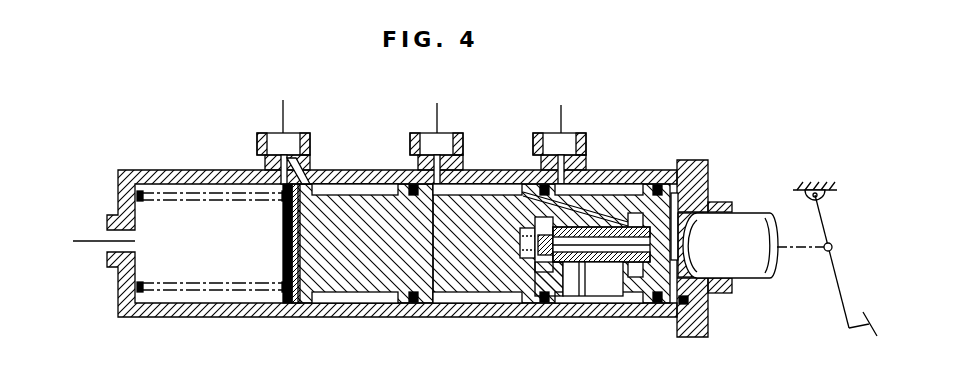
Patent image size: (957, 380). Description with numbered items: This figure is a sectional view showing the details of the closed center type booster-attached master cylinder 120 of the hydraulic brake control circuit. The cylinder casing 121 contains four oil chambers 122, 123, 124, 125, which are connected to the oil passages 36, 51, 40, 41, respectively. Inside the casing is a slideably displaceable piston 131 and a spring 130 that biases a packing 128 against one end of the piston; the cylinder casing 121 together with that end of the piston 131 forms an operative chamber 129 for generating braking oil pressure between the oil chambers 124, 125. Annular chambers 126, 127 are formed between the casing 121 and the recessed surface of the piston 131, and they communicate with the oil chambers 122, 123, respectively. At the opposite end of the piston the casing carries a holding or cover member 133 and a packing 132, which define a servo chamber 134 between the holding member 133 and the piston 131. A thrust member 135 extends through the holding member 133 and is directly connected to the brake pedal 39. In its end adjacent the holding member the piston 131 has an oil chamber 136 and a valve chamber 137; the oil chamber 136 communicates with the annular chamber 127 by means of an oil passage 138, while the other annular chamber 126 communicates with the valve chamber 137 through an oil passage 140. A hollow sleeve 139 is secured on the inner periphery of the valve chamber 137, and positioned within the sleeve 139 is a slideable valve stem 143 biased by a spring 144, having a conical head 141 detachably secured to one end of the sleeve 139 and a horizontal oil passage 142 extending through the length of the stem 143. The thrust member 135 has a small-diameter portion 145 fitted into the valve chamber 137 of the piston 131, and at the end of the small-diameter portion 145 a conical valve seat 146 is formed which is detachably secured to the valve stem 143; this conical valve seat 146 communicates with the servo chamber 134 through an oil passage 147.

The closed center type booster-attached master cylinder 120 is at (676, 98).
The cylinder casing 121 is at (286, 310).
The oil chamber 122 is at (578, 140).
The oil chamber 123 is at (452, 133).
The oil chamber 124 is at (300, 133).
The oil chamber 125 is at (138, 243).
The annular chamber 126 is at (640, 185).
The annular chamber 127 is at (460, 200).
The packing 128 is at (283, 217).
The operative chamber 129 is at (223, 295).
The spring 130 is at (183, 195).
The piston 131 is at (408, 300).
The packing 132 is at (708, 185).
The holding or cover member 133 is at (732, 205).
The servo chamber 134 is at (677, 200).
The thrust member 135 is at (775, 265).
The oil chamber 136 is at (667, 213).
The valve chamber 137 is at (520, 255).
The oil passage 138 is at (535, 205).
The hollow sleeve 139 is at (553, 303).
The oil passage 140 is at (580, 297).
The conical head 141 is at (540, 275).
The horizontal oil passage 142 is at (597, 280).
The valve stem 143 is at (625, 303).
The spring 144 is at (520, 243).
The small-diameter portion 145 is at (700, 270).
The conical valve seat 146 is at (690, 303).
The oil passage 147 is at (700, 245).
The oil passage 36 is at (563, 110).
The brake pedal 39 is at (840, 275).
The oil passage 40 is at (285, 107).
The oil passage 41 is at (90, 241).
The oil passage 51 is at (439, 108).